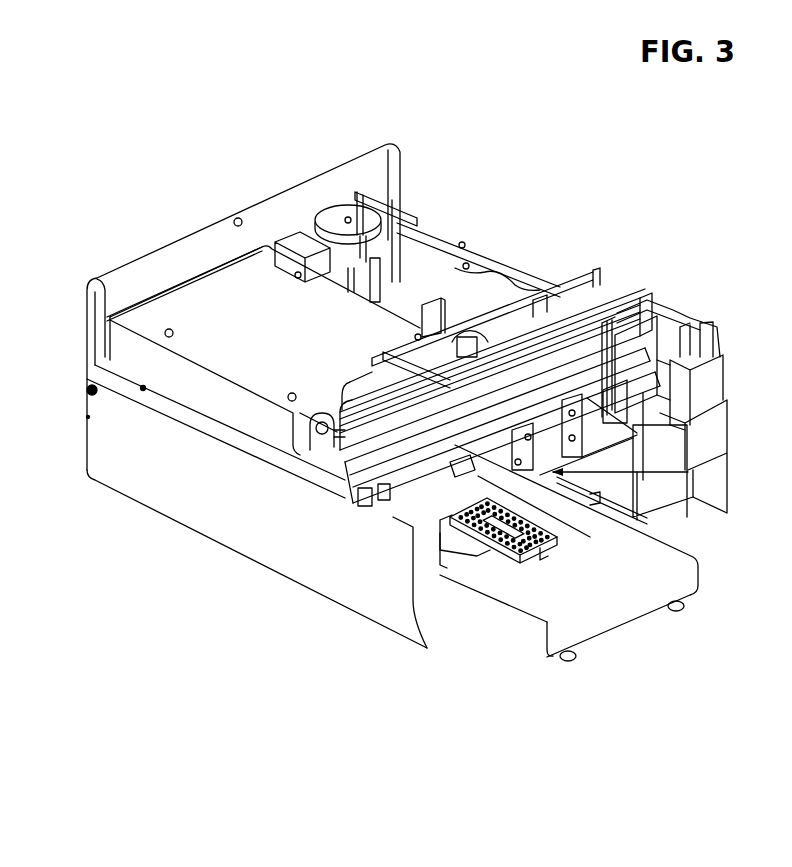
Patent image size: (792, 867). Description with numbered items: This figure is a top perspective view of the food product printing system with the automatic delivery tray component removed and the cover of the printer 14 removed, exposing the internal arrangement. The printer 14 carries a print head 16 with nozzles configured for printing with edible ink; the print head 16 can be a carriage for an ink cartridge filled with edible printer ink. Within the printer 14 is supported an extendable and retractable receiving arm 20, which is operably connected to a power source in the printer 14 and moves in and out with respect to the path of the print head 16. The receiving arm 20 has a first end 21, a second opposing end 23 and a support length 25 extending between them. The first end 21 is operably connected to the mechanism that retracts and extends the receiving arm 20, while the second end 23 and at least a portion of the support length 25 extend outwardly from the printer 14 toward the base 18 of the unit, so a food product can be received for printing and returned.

The printer 14 is at (192, 210).
The print head 16 is at (683, 312).
The base 18 is at (567, 582).
The receiving arm 20 is at (440, 552).
The first end 21 is at (423, 502).
The second opposing end 23 is at (523, 575).
The support length 25 is at (498, 553).